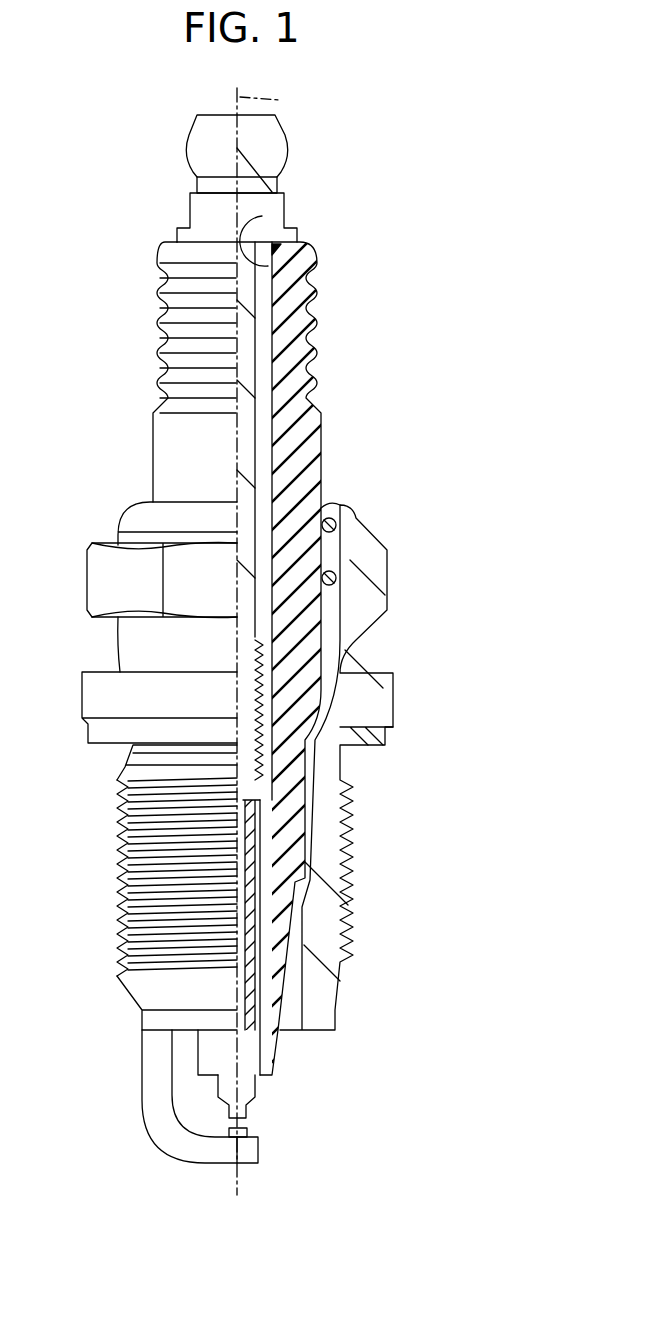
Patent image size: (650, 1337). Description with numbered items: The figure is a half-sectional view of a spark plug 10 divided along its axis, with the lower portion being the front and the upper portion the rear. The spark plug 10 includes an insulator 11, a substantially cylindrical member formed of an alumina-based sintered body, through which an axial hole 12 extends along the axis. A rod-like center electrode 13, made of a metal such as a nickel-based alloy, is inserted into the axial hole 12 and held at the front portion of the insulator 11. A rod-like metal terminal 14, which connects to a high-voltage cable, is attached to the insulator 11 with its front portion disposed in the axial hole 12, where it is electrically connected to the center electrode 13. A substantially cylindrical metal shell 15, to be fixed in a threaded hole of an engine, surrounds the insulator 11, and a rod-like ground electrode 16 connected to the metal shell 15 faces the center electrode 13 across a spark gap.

The spark plug 10 is at (418, 191).
The insulator 11 is at (305, 462).
The axial hole 12 is at (282, 221).
The center electrode 13 is at (252, 1090).
The metal terminal 14 is at (206, 166).
The metal shell 15 is at (105, 583).
The ground electrode 16 is at (172, 1127).